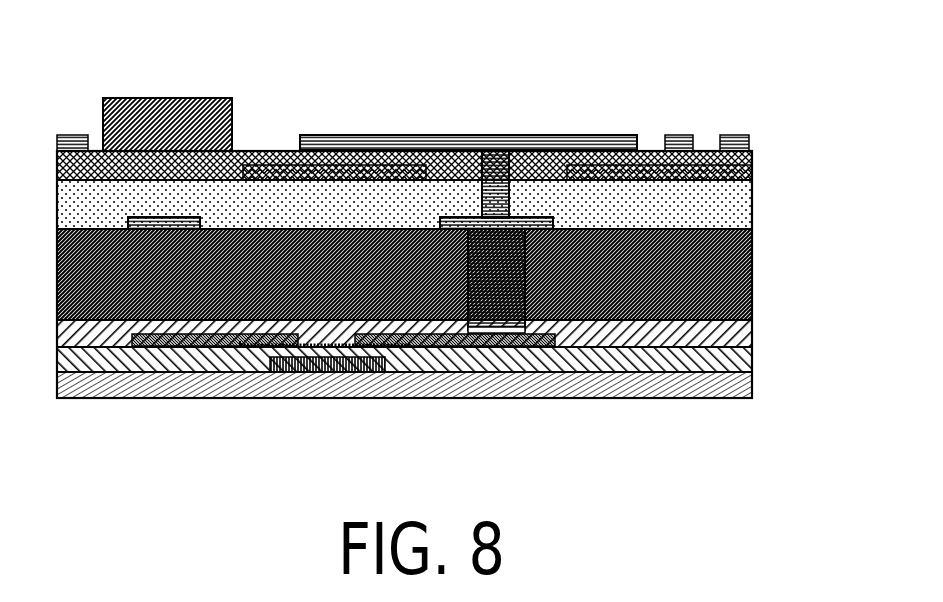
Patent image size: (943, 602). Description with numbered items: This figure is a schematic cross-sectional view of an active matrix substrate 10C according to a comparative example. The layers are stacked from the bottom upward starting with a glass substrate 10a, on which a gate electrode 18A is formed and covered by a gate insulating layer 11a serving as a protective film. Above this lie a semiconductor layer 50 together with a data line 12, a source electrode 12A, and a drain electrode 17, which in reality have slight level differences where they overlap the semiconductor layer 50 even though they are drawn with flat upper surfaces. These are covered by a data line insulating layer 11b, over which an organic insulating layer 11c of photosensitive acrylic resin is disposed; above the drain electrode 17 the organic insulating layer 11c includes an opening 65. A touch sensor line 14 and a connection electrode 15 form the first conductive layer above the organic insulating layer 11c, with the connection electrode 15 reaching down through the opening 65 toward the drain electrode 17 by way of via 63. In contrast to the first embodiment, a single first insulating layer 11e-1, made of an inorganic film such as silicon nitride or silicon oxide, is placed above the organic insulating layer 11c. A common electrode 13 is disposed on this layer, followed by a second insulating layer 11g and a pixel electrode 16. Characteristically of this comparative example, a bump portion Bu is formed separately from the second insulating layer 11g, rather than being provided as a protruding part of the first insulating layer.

The active matrix substrate 10C is at (247, 148).
The first insulating layer 11e-1 is at (745, 205).
The organic insulating layer 11c is at (728, 304).
The data line insulating layer 11b is at (730, 335).
The gate insulating layer 11a is at (730, 364).
The glass substrate 10a is at (728, 386).
The common electrode 13 is at (285, 168).
The data line 12 is at (191, 347).
The drain electrode 17 is at (450, 346).
The semiconductor layer 50 is at (400, 347).
The source electrode 12A is at (247, 336).
The gate electrode 18A is at (320, 372).
The opening 65 is at (523, 277).
The connection electrode 15 is at (477, 328).
The touch sensor line 14 is at (130, 233).
The via conductor 63 is at (520, 150).
The pixel electrode 16 is at (412, 135).
The second insulating layer 11g is at (704, 150).
The bump portion Bu is at (168, 97).